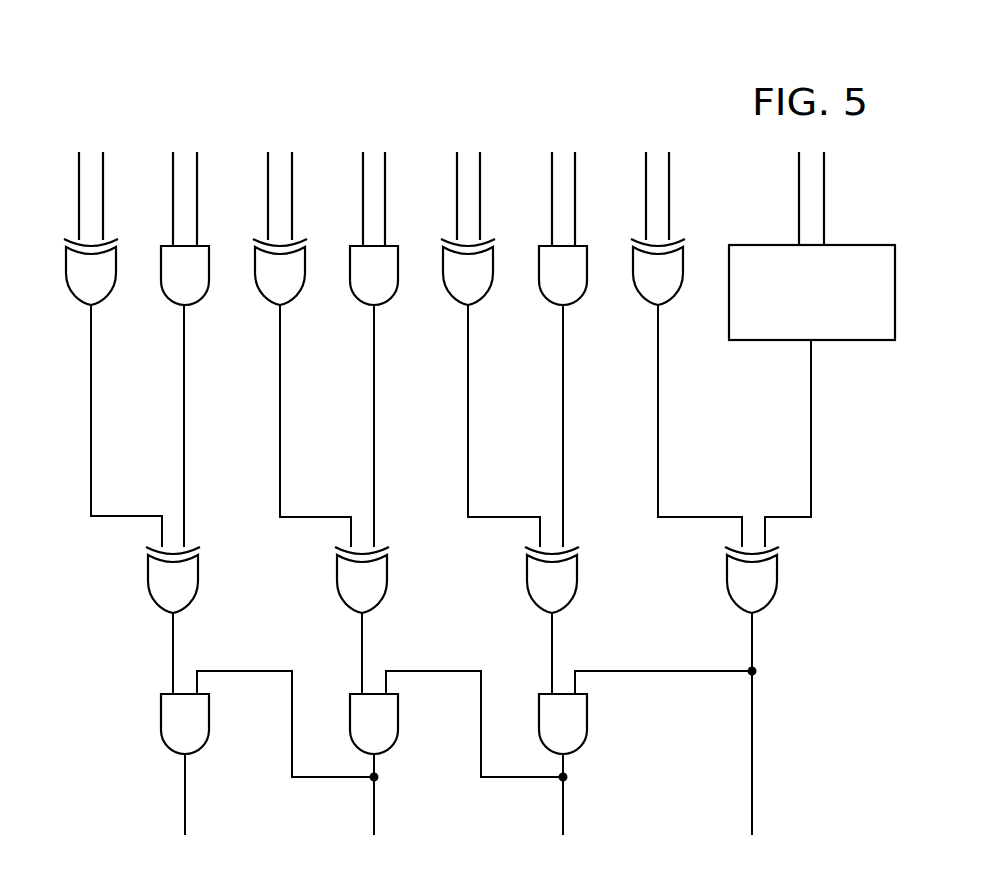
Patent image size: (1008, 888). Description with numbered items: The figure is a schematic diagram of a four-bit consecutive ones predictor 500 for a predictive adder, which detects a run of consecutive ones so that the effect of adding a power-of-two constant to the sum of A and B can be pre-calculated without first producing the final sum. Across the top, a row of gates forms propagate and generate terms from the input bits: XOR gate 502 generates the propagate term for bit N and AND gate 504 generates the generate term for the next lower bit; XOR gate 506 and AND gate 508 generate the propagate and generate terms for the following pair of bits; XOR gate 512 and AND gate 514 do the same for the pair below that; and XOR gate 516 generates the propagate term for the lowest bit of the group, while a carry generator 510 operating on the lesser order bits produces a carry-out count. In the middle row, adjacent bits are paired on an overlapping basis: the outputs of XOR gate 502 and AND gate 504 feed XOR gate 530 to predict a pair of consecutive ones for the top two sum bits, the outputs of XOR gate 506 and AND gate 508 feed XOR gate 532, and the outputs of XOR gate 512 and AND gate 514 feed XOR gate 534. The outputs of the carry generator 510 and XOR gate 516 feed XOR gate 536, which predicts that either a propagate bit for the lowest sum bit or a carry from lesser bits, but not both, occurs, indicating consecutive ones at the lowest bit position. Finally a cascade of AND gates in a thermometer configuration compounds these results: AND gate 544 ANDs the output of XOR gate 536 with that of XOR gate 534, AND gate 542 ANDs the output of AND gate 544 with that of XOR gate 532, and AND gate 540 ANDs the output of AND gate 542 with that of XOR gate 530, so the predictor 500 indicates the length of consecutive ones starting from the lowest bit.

The four-bit consecutive ones predictor 500 is at (287, 115).
The XOR gate 502 is at (72, 290).
The AND gate 504 is at (165, 292).
The XOR gate 506 is at (262, 290).
The AND gate 508 is at (397, 292).
The carry generator 510 is at (845, 340).
The XOR gate 512 is at (489, 290).
The AND gate 514 is at (586, 292).
The XOR gate 516 is at (679, 290).
The XOR gate 530 is at (150, 578).
The XOR gate 532 is at (339, 577).
The XOR gate 534 is at (576, 577).
The XOR gate 536 is at (776, 577).
The AND gate 540 is at (164, 742).
The AND gate 542 is at (396, 742).
The AND gate 544 is at (585, 742).